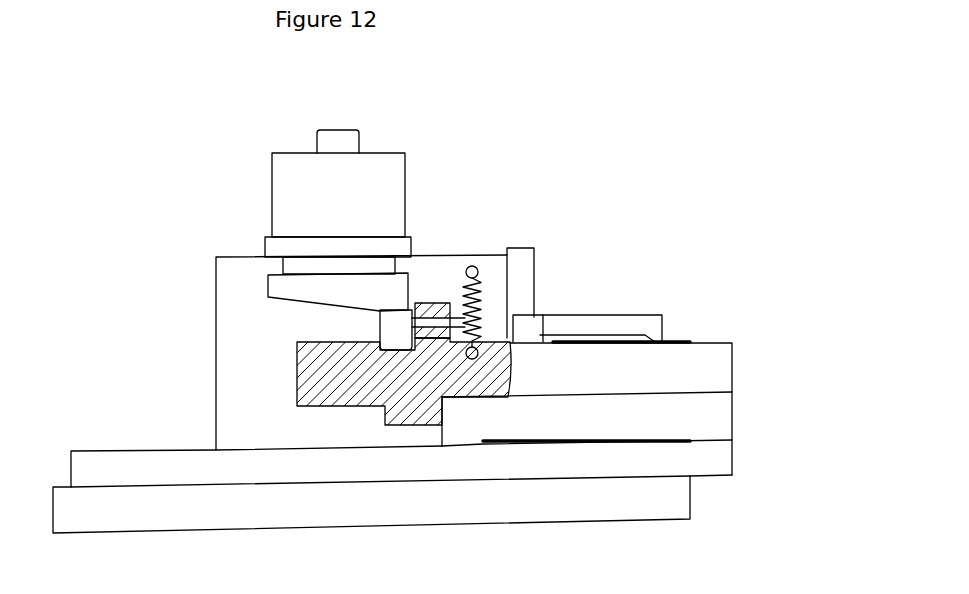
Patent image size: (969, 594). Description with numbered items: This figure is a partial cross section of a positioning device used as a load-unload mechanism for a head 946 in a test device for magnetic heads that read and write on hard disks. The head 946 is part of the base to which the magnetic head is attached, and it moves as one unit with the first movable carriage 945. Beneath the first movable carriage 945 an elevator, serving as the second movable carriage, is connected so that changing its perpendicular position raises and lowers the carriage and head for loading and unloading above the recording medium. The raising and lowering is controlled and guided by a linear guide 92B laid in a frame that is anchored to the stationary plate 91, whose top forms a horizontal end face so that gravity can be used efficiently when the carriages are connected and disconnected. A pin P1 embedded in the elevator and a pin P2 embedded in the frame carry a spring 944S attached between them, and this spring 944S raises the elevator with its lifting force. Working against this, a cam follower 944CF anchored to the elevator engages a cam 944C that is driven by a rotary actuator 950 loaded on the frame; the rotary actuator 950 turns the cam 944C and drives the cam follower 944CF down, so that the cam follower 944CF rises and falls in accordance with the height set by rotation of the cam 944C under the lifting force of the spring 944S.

The rotary actuator 950 is at (292, 203).
The cam 944C is at (312, 290).
The cam follower 944CF is at (398, 327).
The pin P2 is at (478, 266).
The linear guide 92B is at (520, 264).
The spring 944S is at (485, 318).
The pin P1 is at (490, 348).
The head 946 is at (683, 365).
The first movable carriage 945 is at (672, 412).
The stationary plate 91 is at (675, 458).